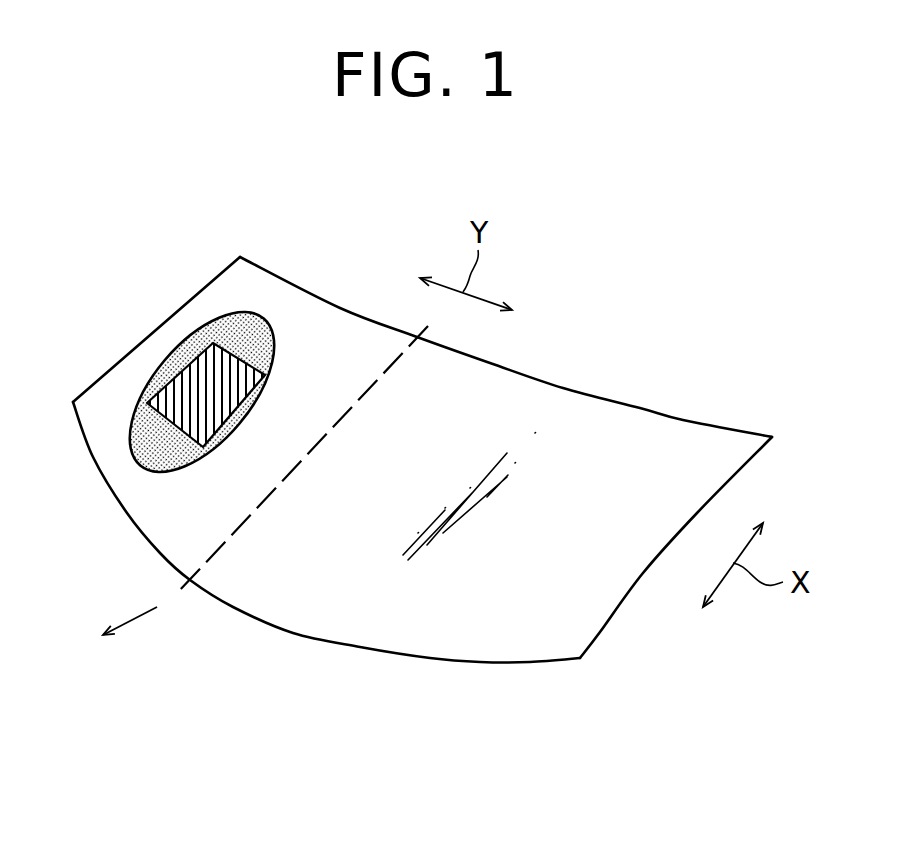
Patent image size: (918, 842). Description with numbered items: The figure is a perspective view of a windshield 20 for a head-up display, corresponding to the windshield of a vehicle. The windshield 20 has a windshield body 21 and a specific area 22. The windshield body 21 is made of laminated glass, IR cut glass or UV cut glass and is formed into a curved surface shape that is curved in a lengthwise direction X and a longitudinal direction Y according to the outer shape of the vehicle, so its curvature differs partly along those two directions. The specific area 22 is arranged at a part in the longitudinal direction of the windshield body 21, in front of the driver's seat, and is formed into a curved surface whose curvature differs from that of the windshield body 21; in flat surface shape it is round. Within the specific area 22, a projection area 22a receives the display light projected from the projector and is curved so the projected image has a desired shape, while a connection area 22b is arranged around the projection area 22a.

The glass plate 20 is at (532, 338).
The glass surface 21 is at (550, 408).
The marking region 22 is at (217, 306).
The hatched portion 22a is at (183, 383).
The stippled portion 22b is at (268, 313).